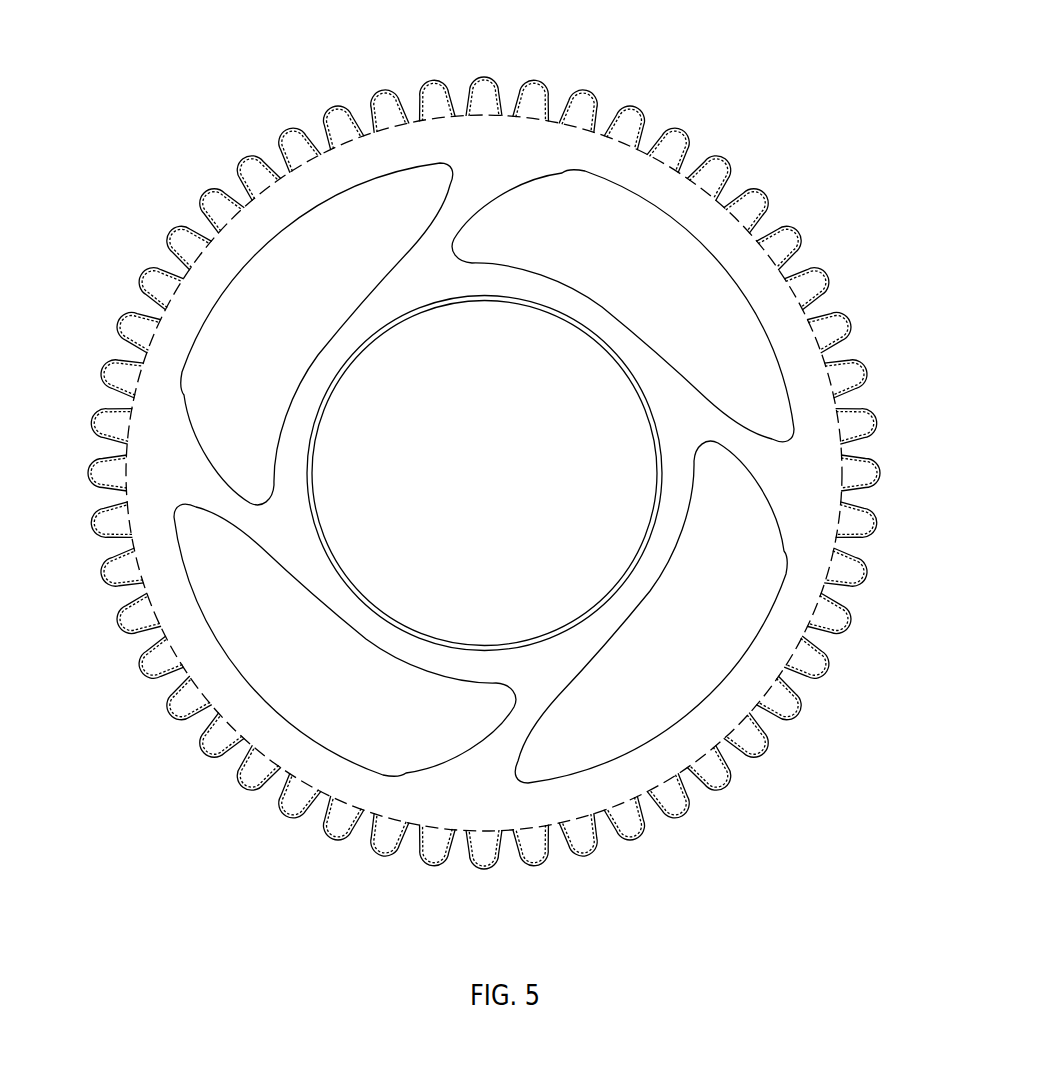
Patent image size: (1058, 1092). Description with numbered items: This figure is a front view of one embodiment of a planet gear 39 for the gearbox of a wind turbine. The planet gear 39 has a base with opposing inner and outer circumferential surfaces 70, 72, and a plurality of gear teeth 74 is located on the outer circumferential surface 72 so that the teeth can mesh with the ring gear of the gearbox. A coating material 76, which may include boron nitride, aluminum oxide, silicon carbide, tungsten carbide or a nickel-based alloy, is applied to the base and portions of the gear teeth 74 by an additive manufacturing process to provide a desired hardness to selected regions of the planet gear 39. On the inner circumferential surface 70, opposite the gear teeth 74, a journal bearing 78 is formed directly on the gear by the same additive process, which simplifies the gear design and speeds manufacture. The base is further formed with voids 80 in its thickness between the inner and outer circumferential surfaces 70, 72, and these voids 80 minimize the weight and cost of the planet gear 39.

The planet gear 39 is at (874, 236).
The inner circumferential surface 70 is at (332, 750).
The outer circumferential surface 72 is at (122, 640).
The gear teeth 74 is at (222, 732).
The coating material 76 is at (632, 103).
The journal bearing 78 is at (455, 300).
The voids 80 is at (223, 397).